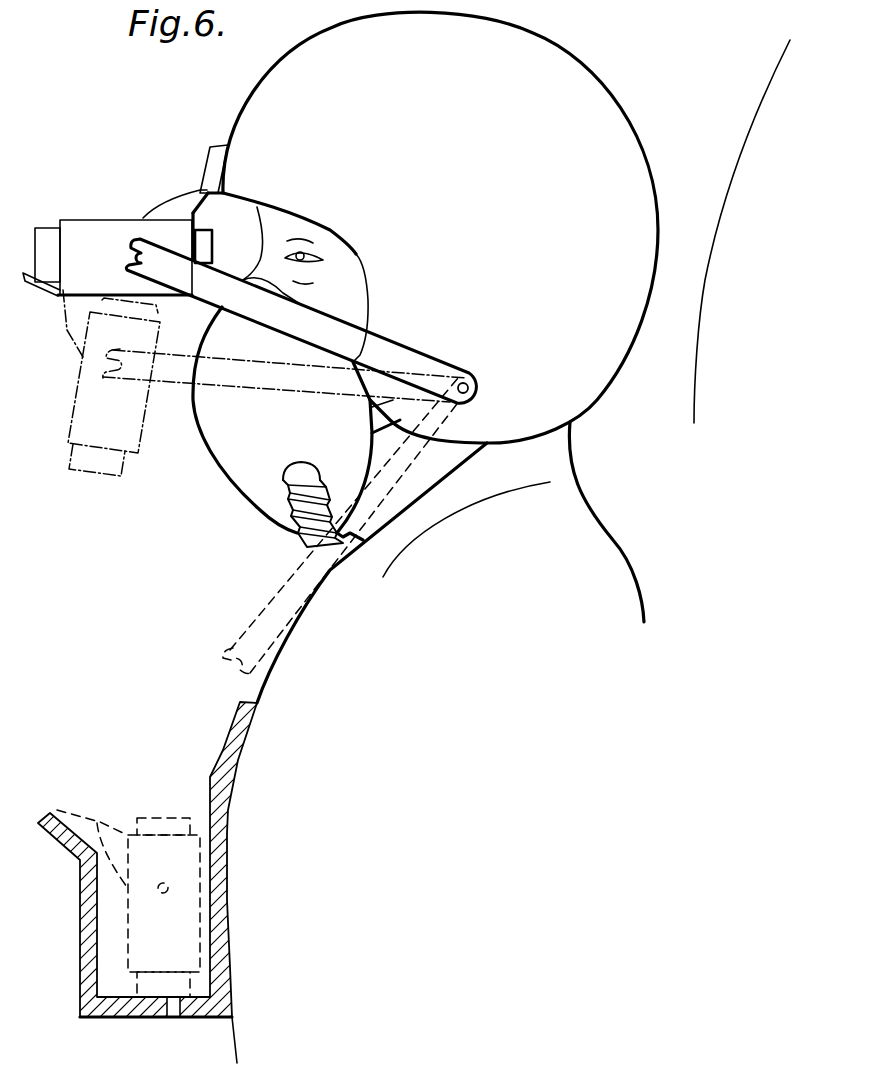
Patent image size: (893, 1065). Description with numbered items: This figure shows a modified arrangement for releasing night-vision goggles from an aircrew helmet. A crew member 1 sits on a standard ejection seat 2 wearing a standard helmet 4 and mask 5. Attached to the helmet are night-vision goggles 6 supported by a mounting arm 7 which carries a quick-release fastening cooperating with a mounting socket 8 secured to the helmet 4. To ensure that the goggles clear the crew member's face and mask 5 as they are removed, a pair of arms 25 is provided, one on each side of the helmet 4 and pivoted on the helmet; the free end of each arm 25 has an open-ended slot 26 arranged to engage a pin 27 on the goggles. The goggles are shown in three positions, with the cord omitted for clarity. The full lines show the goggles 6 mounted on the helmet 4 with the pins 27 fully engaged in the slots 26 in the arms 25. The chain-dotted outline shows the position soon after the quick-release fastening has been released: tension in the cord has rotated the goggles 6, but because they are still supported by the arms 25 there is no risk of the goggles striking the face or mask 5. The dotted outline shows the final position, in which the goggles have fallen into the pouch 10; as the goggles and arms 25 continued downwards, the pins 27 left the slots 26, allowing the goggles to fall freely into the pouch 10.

The crew member 1 is at (330, 623).
The ejection seat 2 is at (760, 113).
The helmet 4 is at (558, 70).
The mask 5 is at (237, 450).
The night-vision goggles 6 is at (100, 228).
The mounting arm 7 is at (157, 213).
The mounting socket 8 is at (218, 170).
The pouch 10 is at (90, 943).
The arms 25 is at (182, 268).
The open-ended slot 26 is at (225, 673).
The pin 27 is at (107, 367).